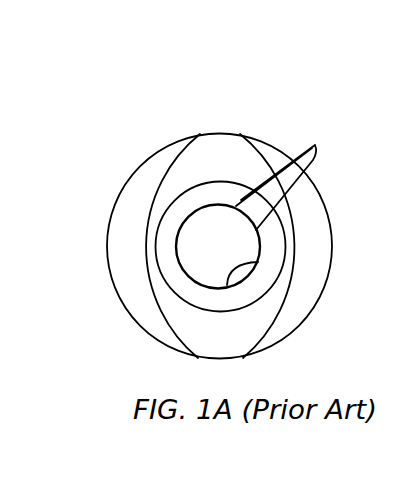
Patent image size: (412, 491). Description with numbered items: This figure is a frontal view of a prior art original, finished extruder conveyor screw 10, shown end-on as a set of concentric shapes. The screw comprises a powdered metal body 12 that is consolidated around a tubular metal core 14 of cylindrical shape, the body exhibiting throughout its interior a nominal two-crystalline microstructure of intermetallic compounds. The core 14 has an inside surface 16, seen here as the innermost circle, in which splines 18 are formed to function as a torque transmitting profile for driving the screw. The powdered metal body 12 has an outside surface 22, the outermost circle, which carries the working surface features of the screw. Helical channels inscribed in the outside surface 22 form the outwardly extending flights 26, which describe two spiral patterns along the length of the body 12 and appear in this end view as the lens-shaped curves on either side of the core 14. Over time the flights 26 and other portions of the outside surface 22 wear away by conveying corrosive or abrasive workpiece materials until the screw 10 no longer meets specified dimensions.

The extruder conveyor screw 10 is at (215, 82).
The powdered metal body 12 is at (185, 173).
The tubular metal core 14 is at (168, 255).
The inside surface 16 is at (258, 262).
The splines 18 is at (293, 176).
The outside surface 22 is at (330, 213).
The flights 26 is at (218, 134).